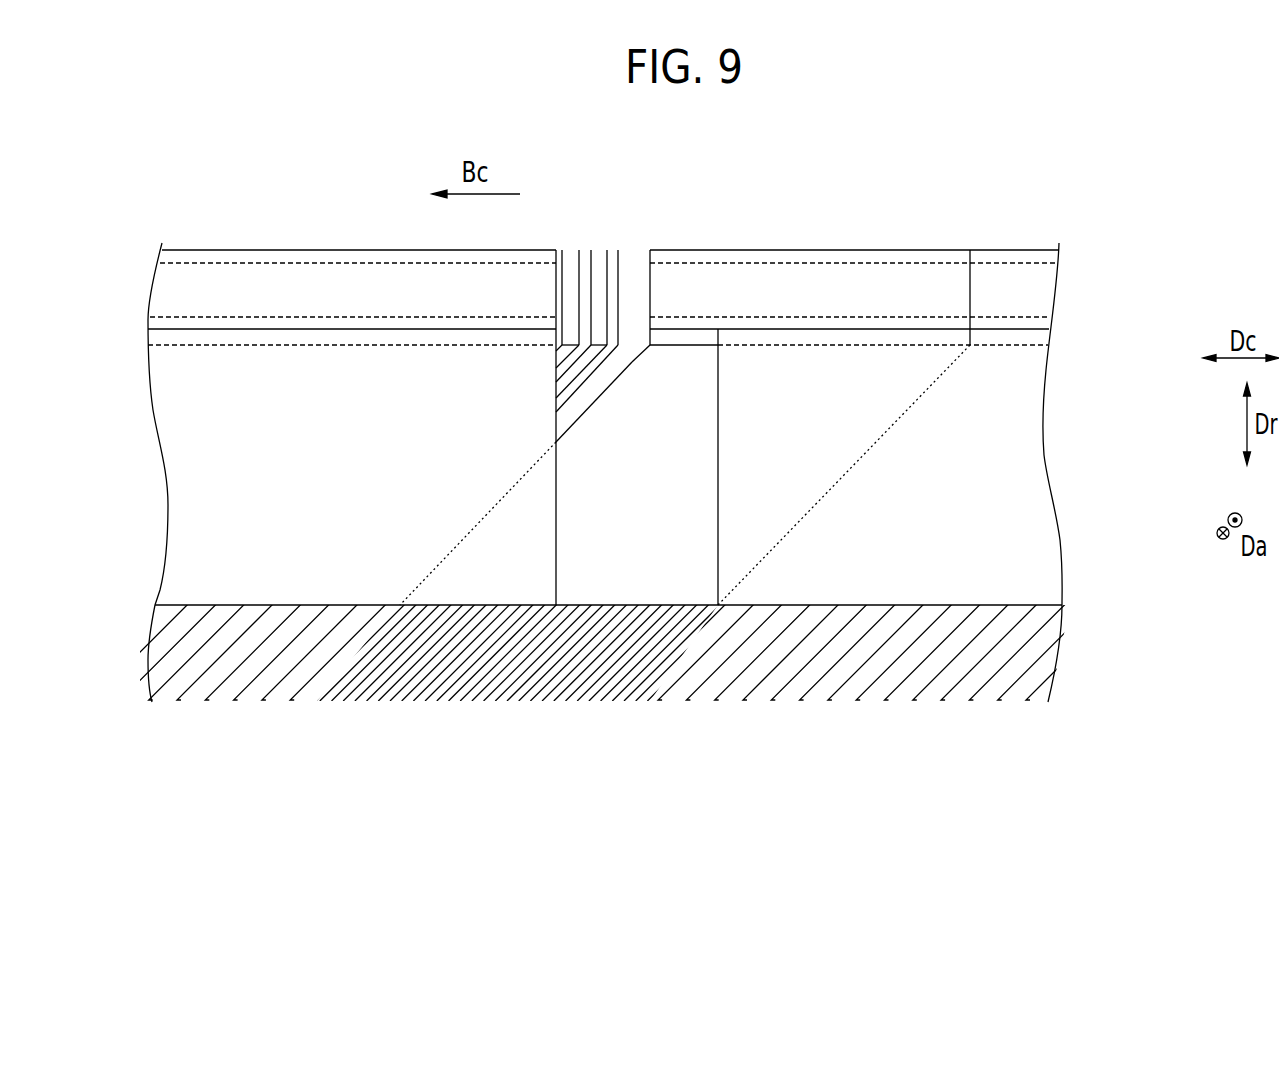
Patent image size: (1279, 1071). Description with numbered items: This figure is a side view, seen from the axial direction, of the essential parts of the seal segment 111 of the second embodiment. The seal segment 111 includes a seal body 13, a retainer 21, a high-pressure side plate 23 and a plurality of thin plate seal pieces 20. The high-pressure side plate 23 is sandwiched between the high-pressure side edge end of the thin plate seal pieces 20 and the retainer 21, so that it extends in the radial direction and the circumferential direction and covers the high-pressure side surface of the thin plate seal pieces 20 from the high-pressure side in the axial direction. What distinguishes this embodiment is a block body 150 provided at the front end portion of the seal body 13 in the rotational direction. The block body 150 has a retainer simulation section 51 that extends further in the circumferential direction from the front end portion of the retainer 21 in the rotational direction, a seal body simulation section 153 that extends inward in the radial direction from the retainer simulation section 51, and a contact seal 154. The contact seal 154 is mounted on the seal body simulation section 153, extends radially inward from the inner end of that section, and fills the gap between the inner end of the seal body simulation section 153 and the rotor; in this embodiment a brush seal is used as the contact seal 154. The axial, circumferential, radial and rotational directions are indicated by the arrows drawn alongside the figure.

The seal segment 111 is at (908, 186).
The seal body simulation section 153 is at (632, 362).
The retainer simulation section 51 is at (822, 250).
The seal body 13 is at (1082, 240).
The retainer 21 is at (1043, 286).
The high-pressure side plate 23 is at (1013, 449).
The thin plate seal piece 20 is at (635, 691).
The contact seal 154 is at (383, 700).
The block body 150 is at (541, 742).